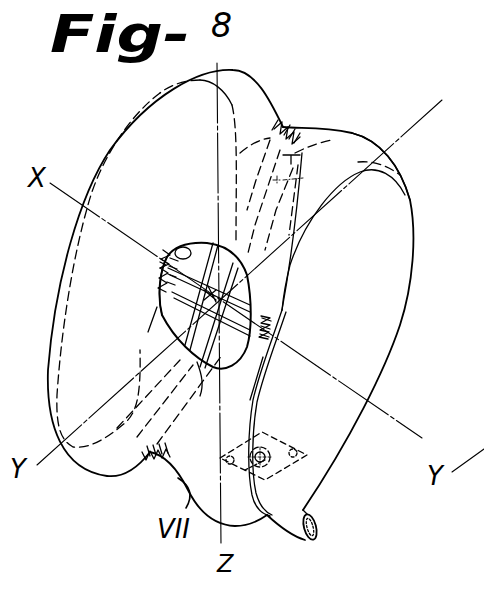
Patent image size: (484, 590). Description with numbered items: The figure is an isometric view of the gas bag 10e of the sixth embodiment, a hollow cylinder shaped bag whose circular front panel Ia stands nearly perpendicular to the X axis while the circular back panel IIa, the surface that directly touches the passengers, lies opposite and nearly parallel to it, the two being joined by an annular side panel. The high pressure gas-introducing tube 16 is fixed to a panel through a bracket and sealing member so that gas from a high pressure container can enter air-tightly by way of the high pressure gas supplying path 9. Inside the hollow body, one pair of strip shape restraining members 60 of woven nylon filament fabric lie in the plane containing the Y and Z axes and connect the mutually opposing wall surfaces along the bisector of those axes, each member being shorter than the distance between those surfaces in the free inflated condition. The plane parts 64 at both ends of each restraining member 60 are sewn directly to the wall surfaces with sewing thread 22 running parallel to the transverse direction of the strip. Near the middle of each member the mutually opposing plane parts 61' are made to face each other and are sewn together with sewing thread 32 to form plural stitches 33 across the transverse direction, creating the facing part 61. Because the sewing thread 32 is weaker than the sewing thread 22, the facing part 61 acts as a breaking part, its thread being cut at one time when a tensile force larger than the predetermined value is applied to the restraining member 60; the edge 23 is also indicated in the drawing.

The high pressure gas supplying path 9 is at (292, 530).
The gas bag 10e is at (399, 191).
The high pressure gas-introducing tube 16 is at (281, 442).
The sewing thread 22 is at (286, 128).
The edge 23 is at (160, 265).
The sewing thread 32 is at (205, 306).
The stitches 33 is at (158, 288).
The strip shape restraining member 60 is at (303, 178).
The facing part 61 is at (327, 334).
The plane parts 61' is at (207, 292).
The plane part 64 is at (335, 135).
The front panel Ia is at (386, 310).
The back panel IIa is at (120, 183).